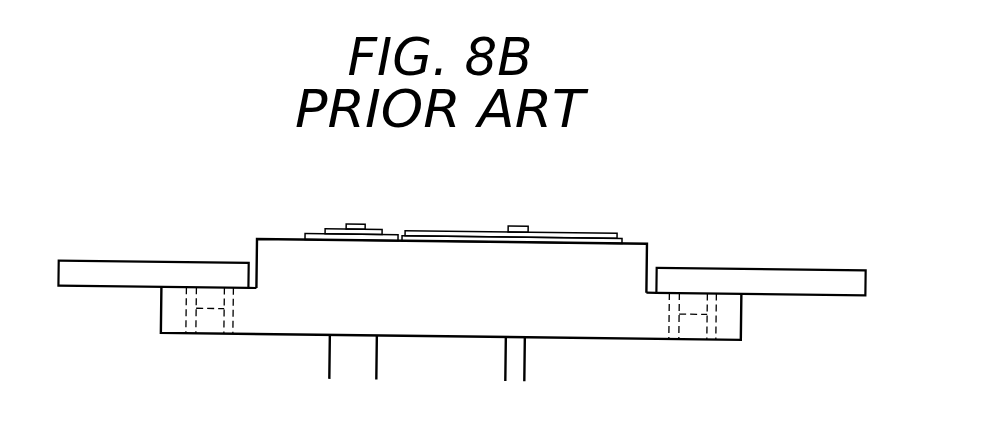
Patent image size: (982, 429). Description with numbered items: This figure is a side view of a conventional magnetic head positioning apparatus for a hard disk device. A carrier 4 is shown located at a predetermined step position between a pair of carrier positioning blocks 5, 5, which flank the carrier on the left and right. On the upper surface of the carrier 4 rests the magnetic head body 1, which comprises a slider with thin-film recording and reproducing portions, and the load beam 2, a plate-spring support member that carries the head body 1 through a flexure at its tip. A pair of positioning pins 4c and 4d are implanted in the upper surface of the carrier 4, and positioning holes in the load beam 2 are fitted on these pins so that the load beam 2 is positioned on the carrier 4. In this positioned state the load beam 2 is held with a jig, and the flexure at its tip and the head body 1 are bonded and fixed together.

The magnetic head body 1 is at (623, 240).
The load beam 2 is at (450, 233).
The carrier 4 is at (448, 338).
The positioning pin 4c is at (358, 222).
The positioning pin 4d is at (518, 224).
The carrier positioning block 5 is at (112, 260).